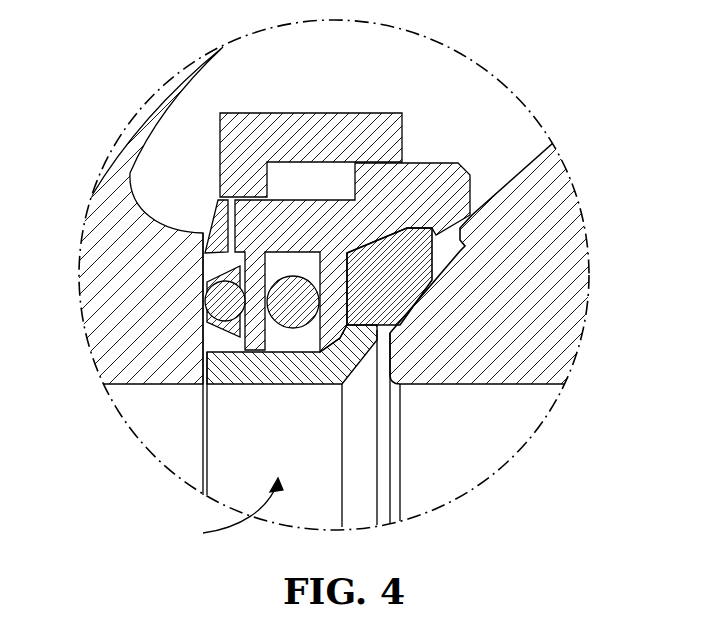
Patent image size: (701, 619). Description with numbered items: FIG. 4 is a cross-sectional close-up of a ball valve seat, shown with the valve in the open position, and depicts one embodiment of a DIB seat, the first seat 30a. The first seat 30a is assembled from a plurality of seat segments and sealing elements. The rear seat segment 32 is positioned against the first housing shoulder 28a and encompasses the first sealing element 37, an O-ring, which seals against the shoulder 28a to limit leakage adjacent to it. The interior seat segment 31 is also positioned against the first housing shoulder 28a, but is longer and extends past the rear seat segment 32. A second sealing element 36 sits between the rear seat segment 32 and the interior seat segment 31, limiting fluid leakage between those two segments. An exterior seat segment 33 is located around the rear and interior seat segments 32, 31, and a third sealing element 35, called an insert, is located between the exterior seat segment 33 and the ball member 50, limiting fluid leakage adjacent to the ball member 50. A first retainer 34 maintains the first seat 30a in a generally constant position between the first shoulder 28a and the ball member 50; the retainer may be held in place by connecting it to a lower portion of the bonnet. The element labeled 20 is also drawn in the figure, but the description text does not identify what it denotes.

The slanted plate 20 is at (152, 105).
The first housing shoulder 28a is at (137, 334).
The first seat 30a is at (221, 515).
The interior seat segment 31 is at (268, 376).
The rear seat segment 32 is at (225, 200).
The exterior seat segment 33 is at (270, 217).
The first retainer 34 is at (325, 125).
The third sealing element 35 is at (402, 287).
The second sealing element 36 is at (203, 232).
The first sealing element 37 is at (222, 302).
The ball member 50 is at (577, 230).